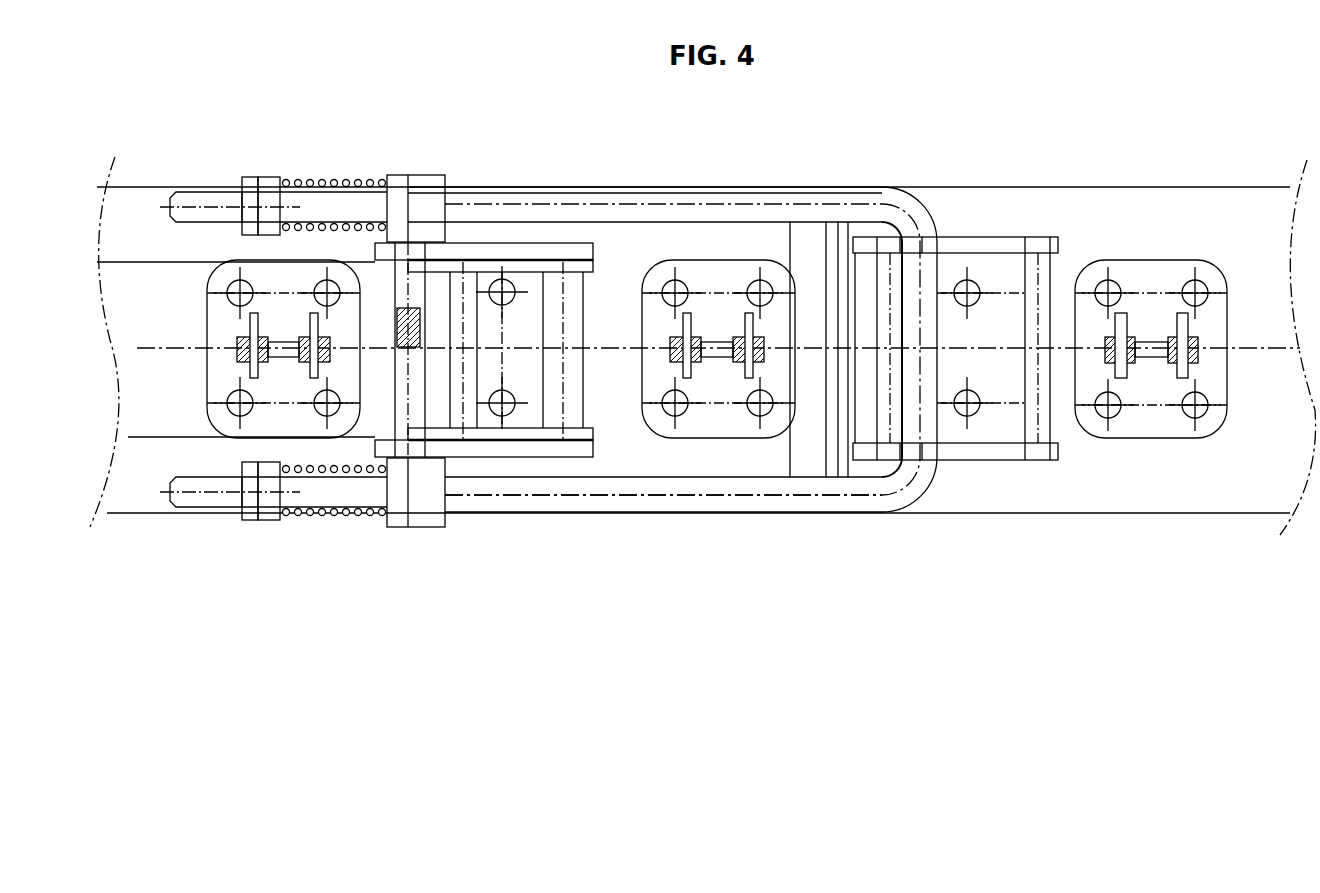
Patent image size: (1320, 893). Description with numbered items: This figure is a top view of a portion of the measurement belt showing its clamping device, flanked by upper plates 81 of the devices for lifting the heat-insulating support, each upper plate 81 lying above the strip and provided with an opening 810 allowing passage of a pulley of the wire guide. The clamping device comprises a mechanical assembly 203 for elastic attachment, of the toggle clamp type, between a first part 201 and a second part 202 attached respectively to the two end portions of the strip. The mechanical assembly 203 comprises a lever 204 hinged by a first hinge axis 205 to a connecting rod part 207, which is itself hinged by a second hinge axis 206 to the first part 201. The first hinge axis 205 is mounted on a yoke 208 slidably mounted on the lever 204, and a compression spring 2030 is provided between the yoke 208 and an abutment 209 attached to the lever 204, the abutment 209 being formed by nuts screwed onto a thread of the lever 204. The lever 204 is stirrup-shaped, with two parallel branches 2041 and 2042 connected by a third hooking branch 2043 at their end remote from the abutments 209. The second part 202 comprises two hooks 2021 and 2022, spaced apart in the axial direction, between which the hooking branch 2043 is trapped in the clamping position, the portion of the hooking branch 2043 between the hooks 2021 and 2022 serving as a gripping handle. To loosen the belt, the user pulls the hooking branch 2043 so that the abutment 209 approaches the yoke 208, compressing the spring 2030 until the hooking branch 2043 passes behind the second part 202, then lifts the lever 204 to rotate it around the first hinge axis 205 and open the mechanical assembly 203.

The upper plate 81 is at (934, 342).
The opening 810 is at (1150, 330).
The first part 201 is at (520, 368).
The second part 202 is at (955, 349).
The hook 2021 is at (983, 238).
The hook 2022 is at (962, 460).
The mechanical assembly 203 is at (672, 497).
The lever 204 is at (705, 337).
The branch 2041 is at (752, 197).
The branch 2042 is at (755, 493).
The hooking branch 2043 is at (932, 310).
The first hinge axis 205 is at (420, 380).
The second hinge axis 206 is at (577, 265).
The connecting rod part 207 is at (490, 243).
The yoke 208 is at (422, 180).
The abutment 209 is at (272, 192).
The compression spring 2030 is at (333, 183).